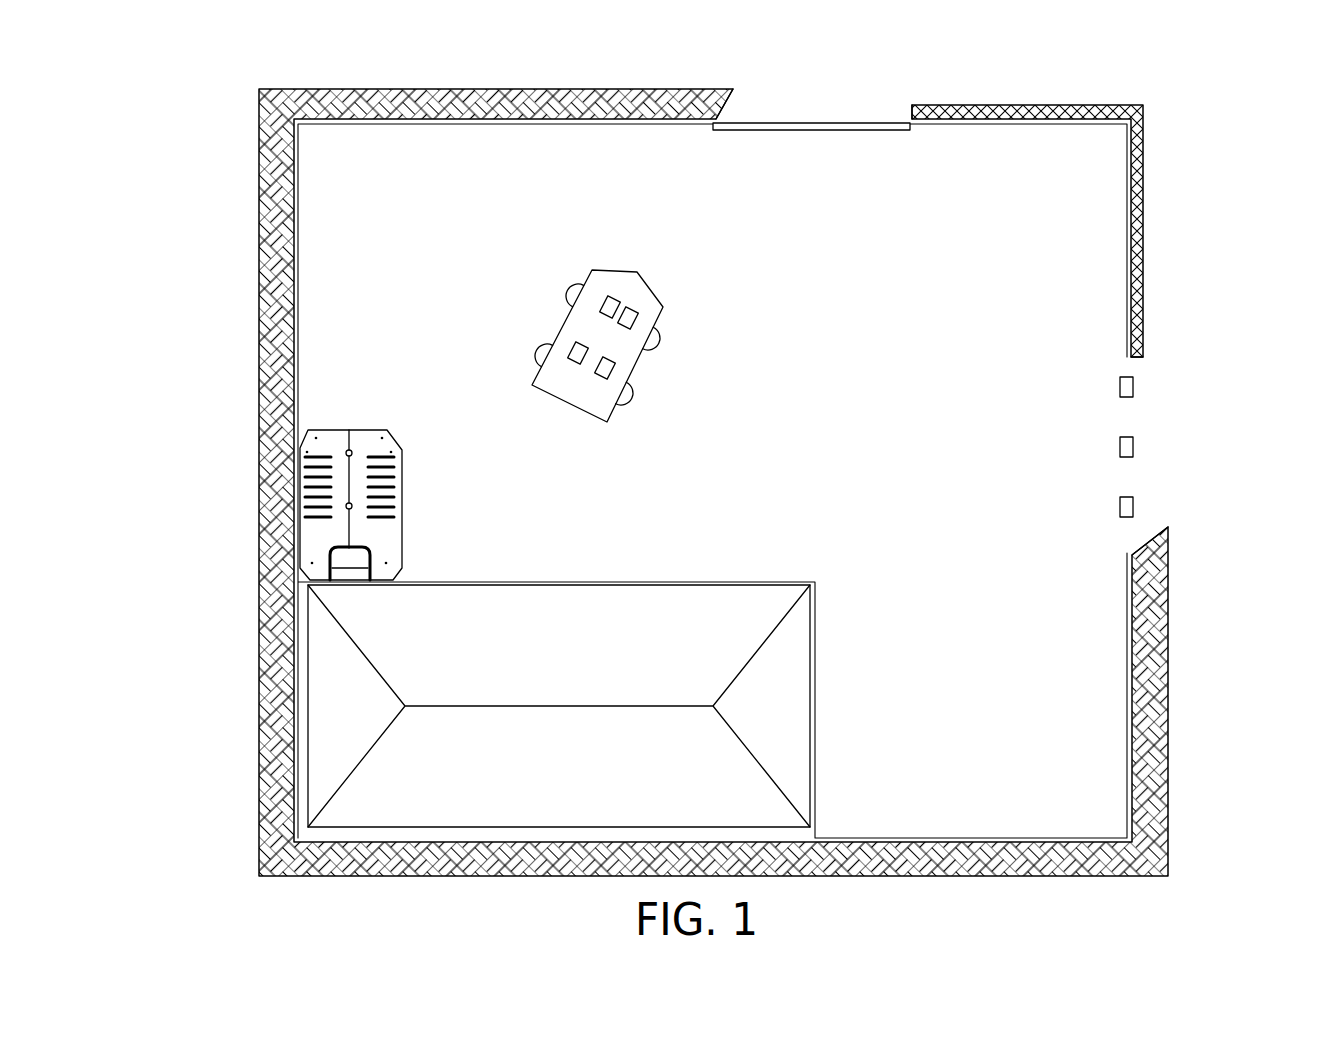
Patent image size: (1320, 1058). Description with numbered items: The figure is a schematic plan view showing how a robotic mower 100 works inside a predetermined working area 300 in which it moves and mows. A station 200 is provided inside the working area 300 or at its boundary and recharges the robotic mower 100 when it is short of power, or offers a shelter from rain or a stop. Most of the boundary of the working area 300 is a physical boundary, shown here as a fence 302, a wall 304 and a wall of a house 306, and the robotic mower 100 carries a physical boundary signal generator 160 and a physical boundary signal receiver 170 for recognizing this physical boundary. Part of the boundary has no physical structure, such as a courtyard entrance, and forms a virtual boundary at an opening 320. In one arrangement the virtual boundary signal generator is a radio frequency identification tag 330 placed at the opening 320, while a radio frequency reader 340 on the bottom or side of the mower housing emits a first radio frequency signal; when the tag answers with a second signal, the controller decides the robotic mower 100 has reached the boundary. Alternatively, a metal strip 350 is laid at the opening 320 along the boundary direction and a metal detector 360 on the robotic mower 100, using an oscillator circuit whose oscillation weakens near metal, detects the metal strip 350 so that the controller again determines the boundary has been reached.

The robotic mower 100 is at (703, 300).
The physical boundary signal generator 160 is at (613, 297).
The physical boundary signal receiver 170 is at (630, 308).
The station 200 is at (403, 548).
The working area 300 is at (320, 250).
The fence 302 is at (1145, 175).
The wall 304 is at (259, 116).
The wall of a house 306 is at (350, 693).
The opening 320 is at (843, 103).
The radio frequency identification tag 330 is at (1135, 447).
The radio frequency reader 340 is at (613, 370).
The metal strip 350 is at (767, 123).
The metal detector 360 is at (572, 348).